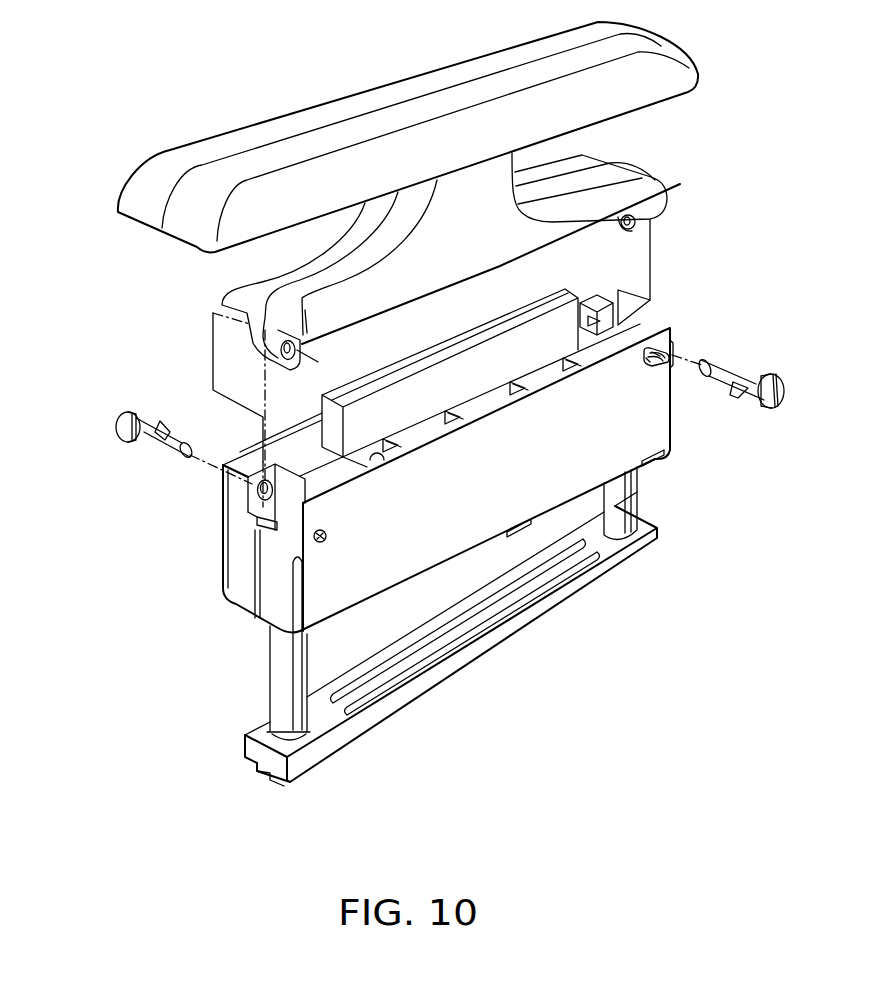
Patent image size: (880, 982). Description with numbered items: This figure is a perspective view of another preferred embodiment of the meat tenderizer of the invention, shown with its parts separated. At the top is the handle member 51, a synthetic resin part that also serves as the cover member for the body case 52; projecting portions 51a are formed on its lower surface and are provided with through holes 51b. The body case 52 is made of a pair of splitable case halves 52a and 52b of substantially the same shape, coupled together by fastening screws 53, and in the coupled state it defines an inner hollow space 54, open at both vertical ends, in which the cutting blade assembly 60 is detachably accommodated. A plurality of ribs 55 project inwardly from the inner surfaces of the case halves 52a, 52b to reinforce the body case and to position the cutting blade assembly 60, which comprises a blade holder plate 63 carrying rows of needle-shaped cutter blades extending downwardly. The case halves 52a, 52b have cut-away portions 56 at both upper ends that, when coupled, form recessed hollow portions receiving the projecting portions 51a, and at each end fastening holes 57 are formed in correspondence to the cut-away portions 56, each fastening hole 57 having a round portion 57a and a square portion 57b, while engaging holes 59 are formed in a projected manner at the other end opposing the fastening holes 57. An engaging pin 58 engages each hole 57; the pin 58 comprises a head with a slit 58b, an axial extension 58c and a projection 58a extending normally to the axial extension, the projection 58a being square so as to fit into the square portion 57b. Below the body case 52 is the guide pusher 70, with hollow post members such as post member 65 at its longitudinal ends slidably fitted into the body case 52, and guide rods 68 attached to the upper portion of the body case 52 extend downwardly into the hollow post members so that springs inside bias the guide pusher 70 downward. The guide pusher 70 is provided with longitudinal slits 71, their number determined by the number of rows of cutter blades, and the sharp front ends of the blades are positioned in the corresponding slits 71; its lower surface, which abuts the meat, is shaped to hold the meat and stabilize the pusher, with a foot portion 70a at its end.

The handle member 51 is at (688, 49).
The projecting portions 51a is at (265, 345).
The through holes 51b is at (297, 357).
The body case 52 is at (678, 323).
The case half 52a is at (653, 443).
The case half 52b is at (235, 565).
The fastening screws 53 is at (313, 541).
The inner hollow space 54 is at (377, 455).
The ribs 55 is at (473, 415).
The cut-away portions 56 is at (250, 512).
The fastening holes 57 is at (257, 491).
The round portion 57a is at (656, 357).
The square portion 57b is at (648, 364).
The engaging pin 58 is at (467, 407).
The projection 58a is at (162, 420).
The slit 58b is at (777, 406).
The axial extension 58c is at (180, 442).
The engaging holes 59 is at (623, 318).
The cutting blade assembly 60 is at (495, 318).
The blade holder plate 63 is at (400, 390).
The post member 65 is at (270, 695).
The guide rods 68 is at (628, 508).
The guide pusher 70 is at (357, 727).
The foot 70a is at (270, 773).
The longitudinal slits 71 is at (437, 637).